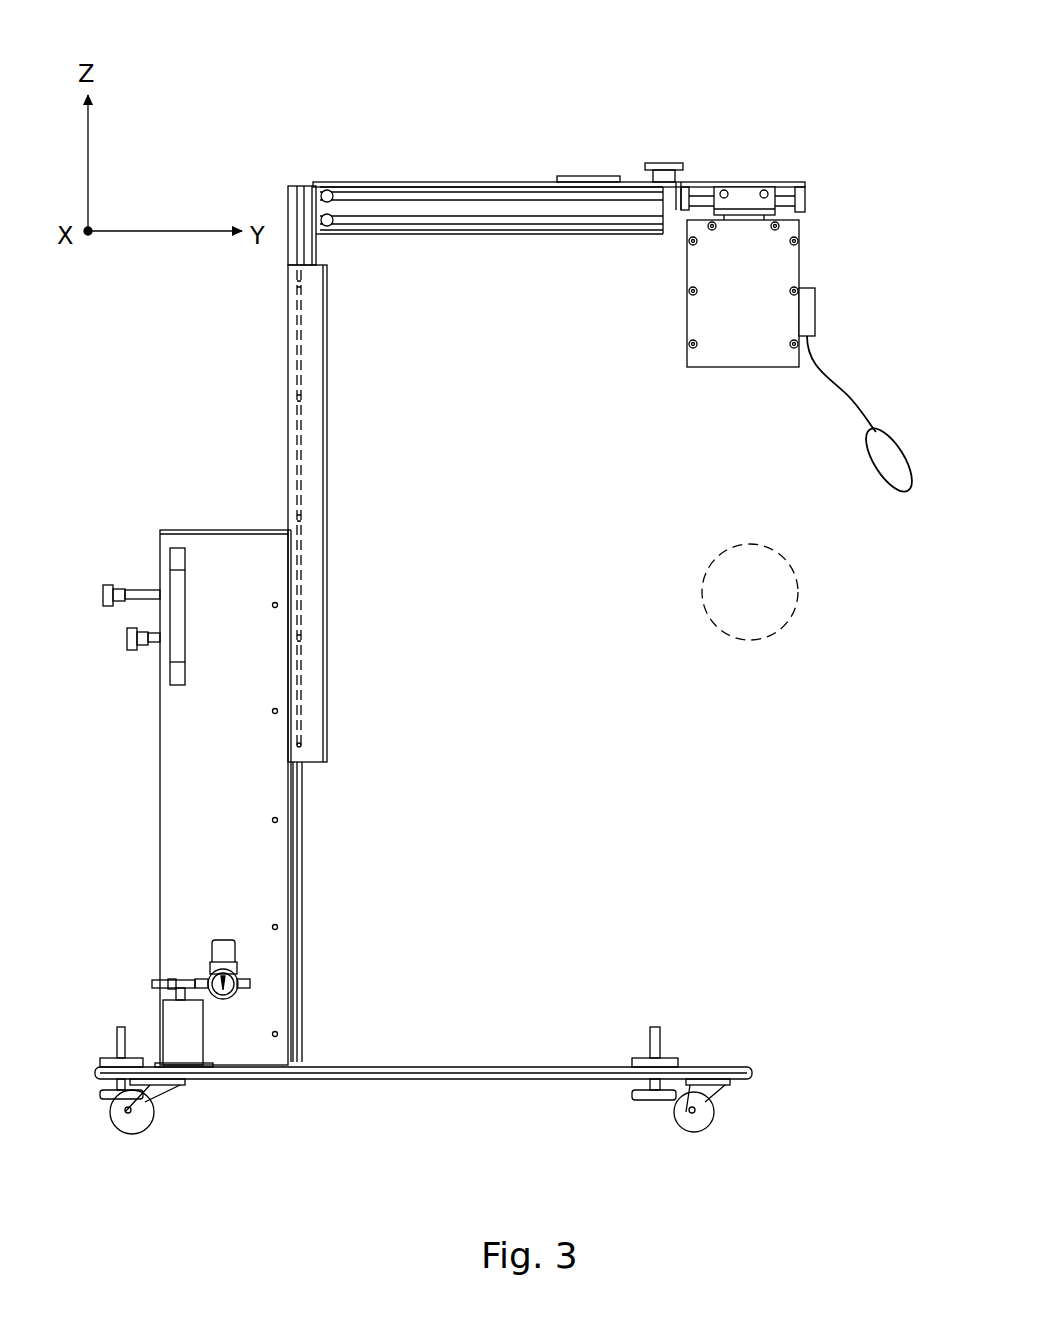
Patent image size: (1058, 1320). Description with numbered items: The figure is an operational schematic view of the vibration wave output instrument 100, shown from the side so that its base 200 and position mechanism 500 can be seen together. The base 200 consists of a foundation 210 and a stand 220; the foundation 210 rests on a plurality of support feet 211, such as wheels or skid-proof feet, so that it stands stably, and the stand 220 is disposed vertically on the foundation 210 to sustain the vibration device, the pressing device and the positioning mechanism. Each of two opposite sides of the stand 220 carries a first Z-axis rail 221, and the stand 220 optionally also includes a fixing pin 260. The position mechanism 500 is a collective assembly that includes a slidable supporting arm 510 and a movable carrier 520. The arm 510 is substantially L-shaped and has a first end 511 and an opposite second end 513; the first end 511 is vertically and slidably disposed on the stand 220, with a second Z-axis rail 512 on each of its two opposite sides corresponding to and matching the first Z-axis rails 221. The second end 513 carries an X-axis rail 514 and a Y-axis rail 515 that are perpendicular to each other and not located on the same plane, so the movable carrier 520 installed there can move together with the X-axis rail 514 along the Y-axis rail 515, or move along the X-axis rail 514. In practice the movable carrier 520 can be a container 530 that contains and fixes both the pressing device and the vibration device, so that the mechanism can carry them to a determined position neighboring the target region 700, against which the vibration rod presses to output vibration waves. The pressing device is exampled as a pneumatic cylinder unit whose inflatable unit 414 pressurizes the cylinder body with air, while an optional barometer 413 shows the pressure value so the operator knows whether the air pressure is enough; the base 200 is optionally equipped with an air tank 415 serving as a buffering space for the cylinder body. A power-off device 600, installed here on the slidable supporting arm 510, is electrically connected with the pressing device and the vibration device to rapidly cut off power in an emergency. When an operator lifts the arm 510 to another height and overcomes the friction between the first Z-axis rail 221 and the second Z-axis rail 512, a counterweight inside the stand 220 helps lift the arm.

The vibration wave output instrument 100 is at (874, 27).
The base 200 is at (471, 1057).
The foundation 210 is at (568, 1065).
The support feet 211 is at (712, 1097).
The stand 220 is at (180, 772).
The first Z-axis rail 221 is at (300, 452).
The fixing pin 260 is at (140, 590).
The barometer 413 is at (808, 312).
The inflatable unit 414 is at (895, 470).
The air tank 415 is at (247, 970).
The position mechanism 500 is at (611, 352).
The slidable supporting arm 510 is at (345, 268).
The first end 511 is at (313, 186).
The second Z-axis rail 512 is at (300, 247).
The second end 513 is at (700, 182).
The X-axis rail 514 is at (762, 187).
The Y-axis rail 515 is at (786, 182).
The movable carrier 520 is at (680, 265).
The container 530 is at (742, 345).
The power-off device 600 is at (663, 163).
The target region 700 is at (785, 607).